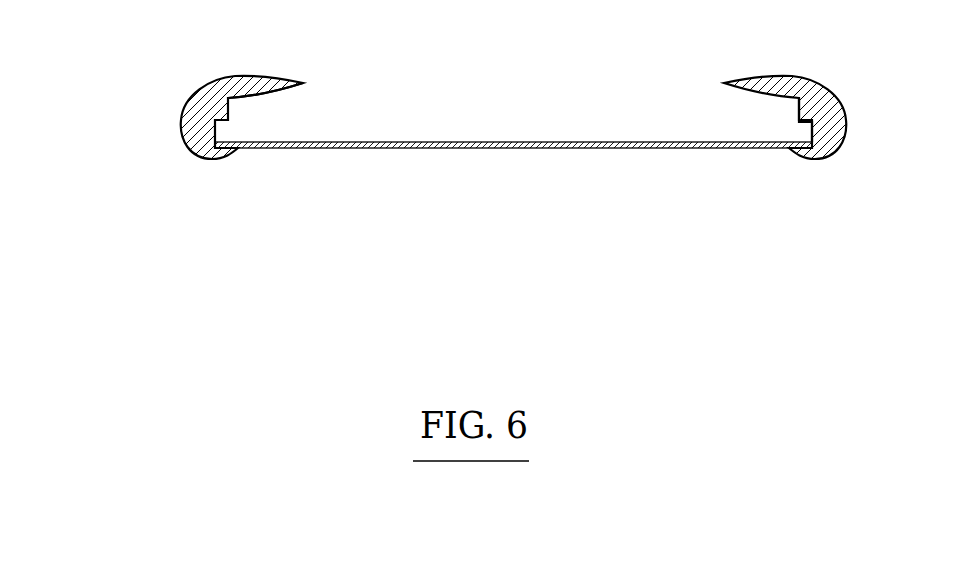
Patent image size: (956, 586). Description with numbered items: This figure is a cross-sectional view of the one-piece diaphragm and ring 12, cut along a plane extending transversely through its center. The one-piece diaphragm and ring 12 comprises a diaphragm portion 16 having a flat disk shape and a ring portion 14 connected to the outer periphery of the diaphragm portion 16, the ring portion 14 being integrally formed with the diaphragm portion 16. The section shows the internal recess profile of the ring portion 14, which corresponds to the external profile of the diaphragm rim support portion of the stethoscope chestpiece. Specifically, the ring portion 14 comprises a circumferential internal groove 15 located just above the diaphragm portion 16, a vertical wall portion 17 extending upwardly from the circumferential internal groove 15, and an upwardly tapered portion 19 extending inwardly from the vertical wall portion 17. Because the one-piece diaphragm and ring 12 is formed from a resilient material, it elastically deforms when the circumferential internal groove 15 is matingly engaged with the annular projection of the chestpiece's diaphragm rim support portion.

The one-piece diaphragm and ring 12 is at (519, 136).
The ring portion 14 is at (203, 112).
The circumferential internal groove 15 is at (813, 138).
The diaphragm portion 16 is at (688, 148).
The vertical wall portion 17 is at (232, 108).
The upwardly tapered portion 19 is at (747, 92).